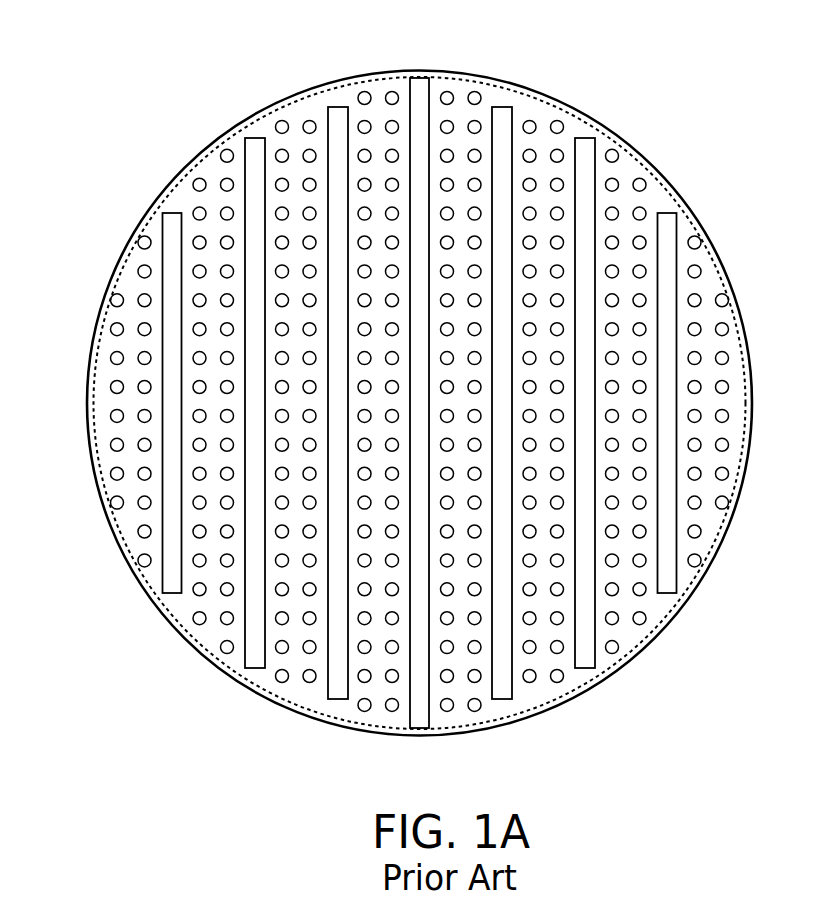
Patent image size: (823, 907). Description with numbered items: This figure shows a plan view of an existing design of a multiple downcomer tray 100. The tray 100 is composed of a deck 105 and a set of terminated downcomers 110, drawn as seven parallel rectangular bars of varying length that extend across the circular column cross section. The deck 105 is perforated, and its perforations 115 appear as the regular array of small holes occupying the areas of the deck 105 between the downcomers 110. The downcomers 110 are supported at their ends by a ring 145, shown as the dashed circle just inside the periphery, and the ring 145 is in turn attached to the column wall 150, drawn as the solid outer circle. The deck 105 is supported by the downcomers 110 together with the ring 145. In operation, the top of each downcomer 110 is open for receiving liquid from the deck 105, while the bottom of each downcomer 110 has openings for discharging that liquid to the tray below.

The multiple downcomer tray 100 is at (135, 95).
The deck 105 is at (128, 277).
The terminated downcomers 110 is at (165, 212).
The perforations 115 is at (117, 327).
The ring 145 is at (691, 215).
The column wall 150 is at (715, 243).